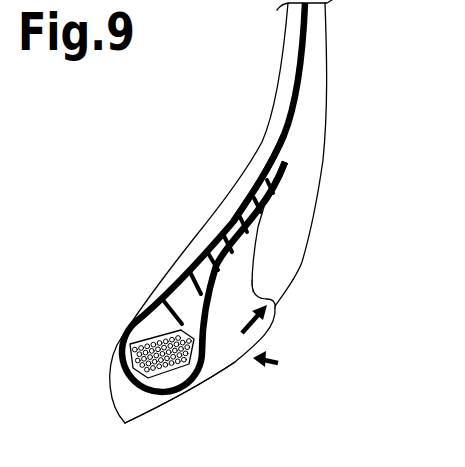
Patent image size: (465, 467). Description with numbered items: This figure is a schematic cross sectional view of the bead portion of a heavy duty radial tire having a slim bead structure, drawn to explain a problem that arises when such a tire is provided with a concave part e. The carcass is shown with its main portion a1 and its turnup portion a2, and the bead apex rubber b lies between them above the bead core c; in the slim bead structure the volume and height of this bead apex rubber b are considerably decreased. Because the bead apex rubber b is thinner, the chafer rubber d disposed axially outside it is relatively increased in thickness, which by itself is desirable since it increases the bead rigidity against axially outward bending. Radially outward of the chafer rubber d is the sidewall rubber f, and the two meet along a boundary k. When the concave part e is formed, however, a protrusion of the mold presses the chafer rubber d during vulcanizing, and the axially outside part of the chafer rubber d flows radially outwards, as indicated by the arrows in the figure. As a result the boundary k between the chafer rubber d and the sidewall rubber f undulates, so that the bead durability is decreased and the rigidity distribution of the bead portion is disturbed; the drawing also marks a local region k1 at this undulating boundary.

The main portion a1 is at (270, 164).
The turnup portion a2 is at (287, 163).
The bead apex rubber b is at (178, 295).
The bead core c is at (122, 367).
The chafer rubber d is at (222, 357).
The concave part e is at (247, 340).
The sidewall rubber f is at (310, 180).
The boundary k is at (257, 227).
The notch of lip k1 is at (256, 287).